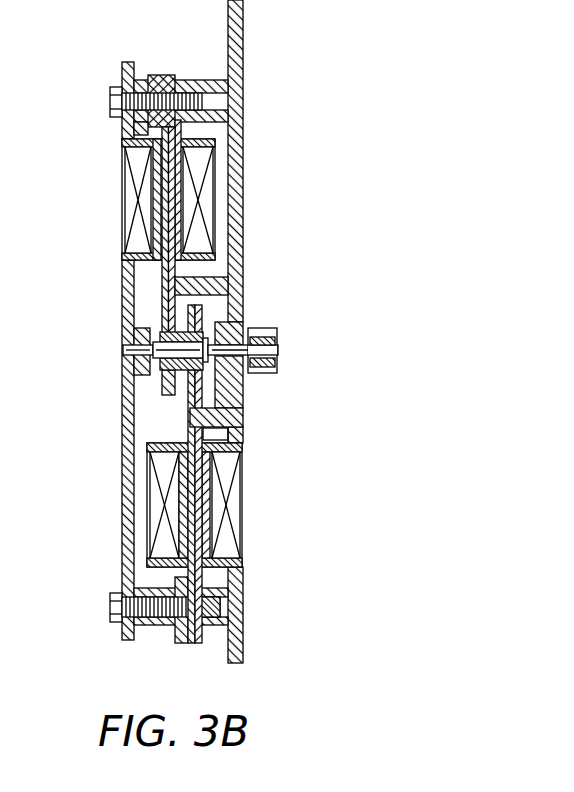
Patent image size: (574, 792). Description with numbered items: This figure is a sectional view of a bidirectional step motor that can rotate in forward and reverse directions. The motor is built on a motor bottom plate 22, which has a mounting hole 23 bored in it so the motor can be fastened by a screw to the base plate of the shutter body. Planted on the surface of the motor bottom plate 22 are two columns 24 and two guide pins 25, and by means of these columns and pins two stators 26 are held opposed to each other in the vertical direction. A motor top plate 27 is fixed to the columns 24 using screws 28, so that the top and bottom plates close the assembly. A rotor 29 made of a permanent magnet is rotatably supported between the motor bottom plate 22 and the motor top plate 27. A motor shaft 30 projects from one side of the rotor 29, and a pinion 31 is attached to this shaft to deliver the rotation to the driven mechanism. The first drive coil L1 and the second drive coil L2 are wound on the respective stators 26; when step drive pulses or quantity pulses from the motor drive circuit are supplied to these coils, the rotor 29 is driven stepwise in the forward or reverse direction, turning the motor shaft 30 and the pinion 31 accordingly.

The motor bottom plate 22 is at (247, 645).
The mounting hole 23 is at (237, 35).
The column 24 is at (205, 82).
The guide pin 25 is at (222, 284).
The stator 26 is at (163, 308).
The motor top plate 27 is at (128, 62).
The screw 28 is at (128, 92).
The rotor 29 is at (165, 363).
The motor shaft 30 is at (279, 351).
The pinion 31 is at (268, 373).
The first drive coil L1 is at (122, 216).
The second drive coil L2 is at (150, 500).